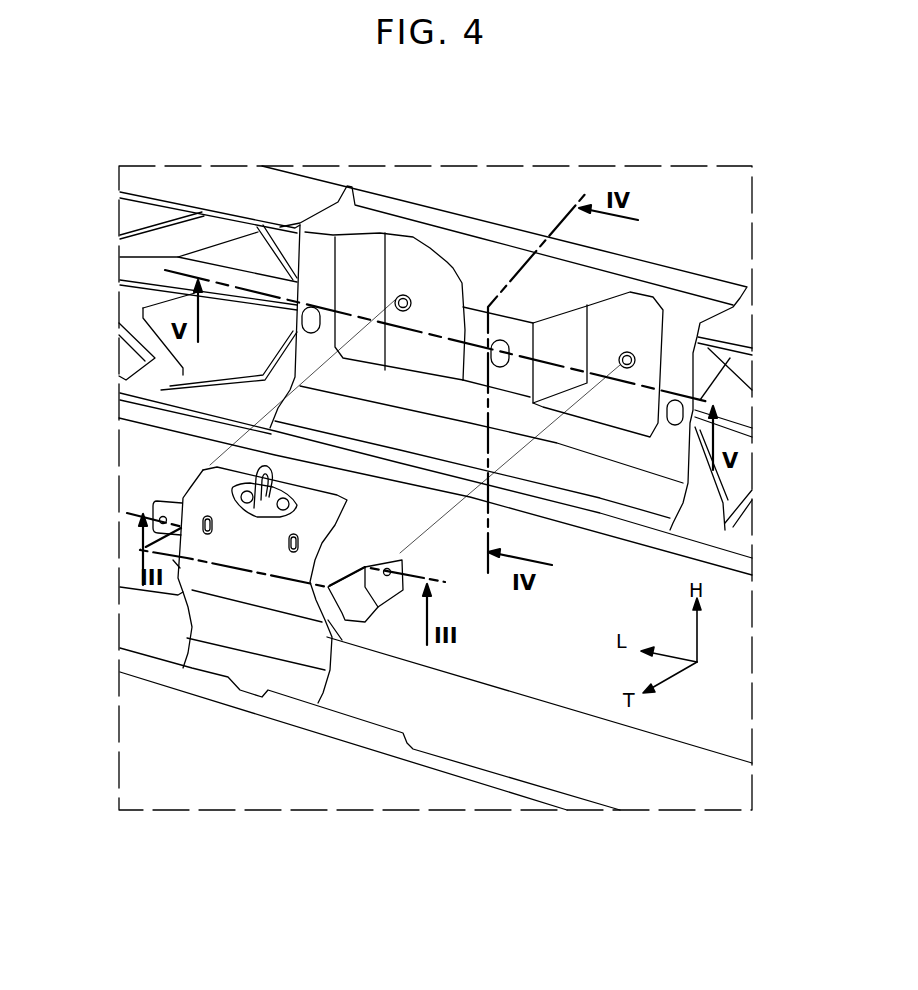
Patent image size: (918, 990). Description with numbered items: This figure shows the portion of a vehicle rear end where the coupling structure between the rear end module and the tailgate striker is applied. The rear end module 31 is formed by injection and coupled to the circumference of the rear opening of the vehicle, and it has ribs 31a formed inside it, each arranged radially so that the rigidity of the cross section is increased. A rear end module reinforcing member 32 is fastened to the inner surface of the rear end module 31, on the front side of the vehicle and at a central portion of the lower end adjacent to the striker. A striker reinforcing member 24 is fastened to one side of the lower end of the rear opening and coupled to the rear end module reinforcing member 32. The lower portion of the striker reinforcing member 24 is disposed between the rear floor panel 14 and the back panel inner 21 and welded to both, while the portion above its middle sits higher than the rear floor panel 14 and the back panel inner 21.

The rear floor panel 14 is at (258, 768).
The back panel inner 21 is at (507, 705).
The striker reinforcing member 24 is at (232, 617).
The rear end module 31 is at (248, 200).
The ribs 31a is at (167, 240).
The rear end module reinforcing member 32 is at (352, 220).